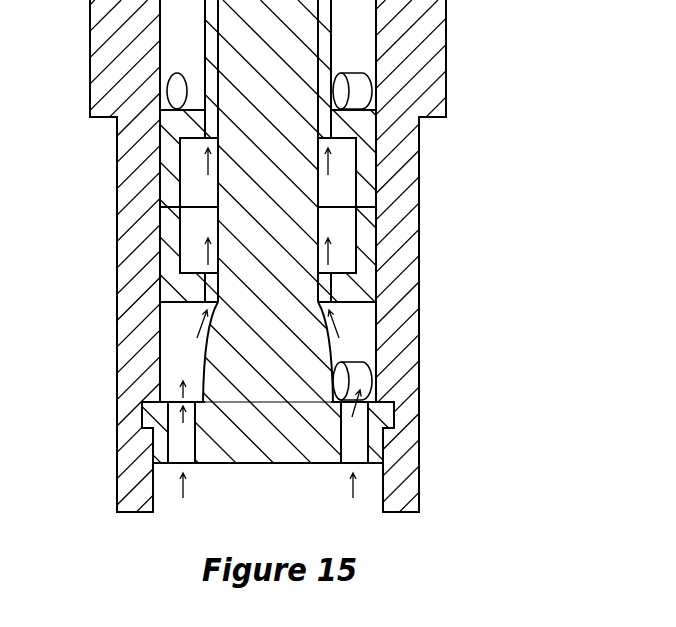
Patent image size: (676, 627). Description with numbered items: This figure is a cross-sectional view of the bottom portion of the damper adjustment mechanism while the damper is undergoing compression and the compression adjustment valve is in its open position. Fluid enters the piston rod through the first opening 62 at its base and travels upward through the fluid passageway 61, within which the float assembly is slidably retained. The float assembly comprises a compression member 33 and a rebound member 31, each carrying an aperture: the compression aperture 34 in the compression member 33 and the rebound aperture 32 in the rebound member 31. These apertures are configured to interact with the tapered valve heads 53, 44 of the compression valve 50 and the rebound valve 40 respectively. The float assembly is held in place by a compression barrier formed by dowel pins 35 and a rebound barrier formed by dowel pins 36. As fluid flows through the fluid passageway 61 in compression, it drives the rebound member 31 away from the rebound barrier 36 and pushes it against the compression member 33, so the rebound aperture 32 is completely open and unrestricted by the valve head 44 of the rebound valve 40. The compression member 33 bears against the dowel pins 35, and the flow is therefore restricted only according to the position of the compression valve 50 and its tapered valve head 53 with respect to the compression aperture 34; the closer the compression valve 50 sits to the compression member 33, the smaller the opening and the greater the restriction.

The compression valve 50 is at (323, 45).
The dowel pins (compression barrier) 35 is at (358, 90).
The compression aperture 34 is at (324, 142).
The compression member 33 is at (367, 172).
The rebound member 31 is at (378, 245).
The rebound aperture 32 is at (362, 280).
The dowel pins (rebound barrier) 36 is at (366, 380).
The tapered valve head 53 is at (183, 102).
The fluid passageway 61 is at (193, 237).
The valve head 44 is at (207, 318).
The rebound valve 40 is at (295, 360).
The first opening 62 is at (255, 485).